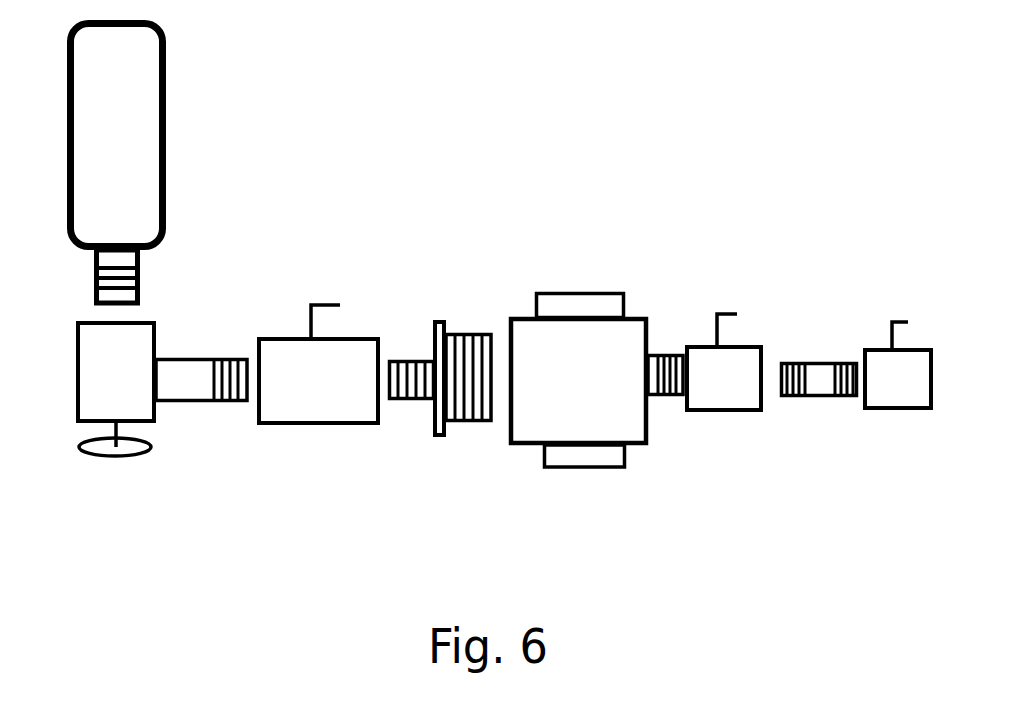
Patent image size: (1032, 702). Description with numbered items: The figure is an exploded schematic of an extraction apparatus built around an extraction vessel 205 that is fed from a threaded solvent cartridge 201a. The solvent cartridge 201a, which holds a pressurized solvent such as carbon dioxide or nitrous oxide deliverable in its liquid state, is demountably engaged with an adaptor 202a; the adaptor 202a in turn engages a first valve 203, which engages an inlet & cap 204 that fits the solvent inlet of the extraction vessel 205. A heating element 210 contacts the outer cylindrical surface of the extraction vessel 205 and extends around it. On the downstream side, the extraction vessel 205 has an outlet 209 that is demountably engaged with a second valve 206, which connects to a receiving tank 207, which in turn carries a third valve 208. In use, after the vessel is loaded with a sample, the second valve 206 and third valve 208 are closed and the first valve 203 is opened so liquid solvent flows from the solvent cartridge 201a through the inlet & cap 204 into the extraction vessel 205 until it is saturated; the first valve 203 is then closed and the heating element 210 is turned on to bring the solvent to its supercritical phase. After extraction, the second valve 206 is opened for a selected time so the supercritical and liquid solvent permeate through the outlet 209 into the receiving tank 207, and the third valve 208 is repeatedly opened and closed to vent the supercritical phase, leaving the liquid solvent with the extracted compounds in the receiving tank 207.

The threaded solvent cartridge 201a is at (177, 167).
The adaptor 202a is at (70, 362).
The first valve 203 is at (311, 433).
The inlet & cap 204 is at (457, 442).
The extraction vessel 205 is at (578, 381).
The second valve 206 is at (721, 423).
The receiving tank 207 is at (818, 412).
The third valve 208 is at (895, 415).
The outlet 209 is at (662, 348).
The heating element 210 is at (555, 283).